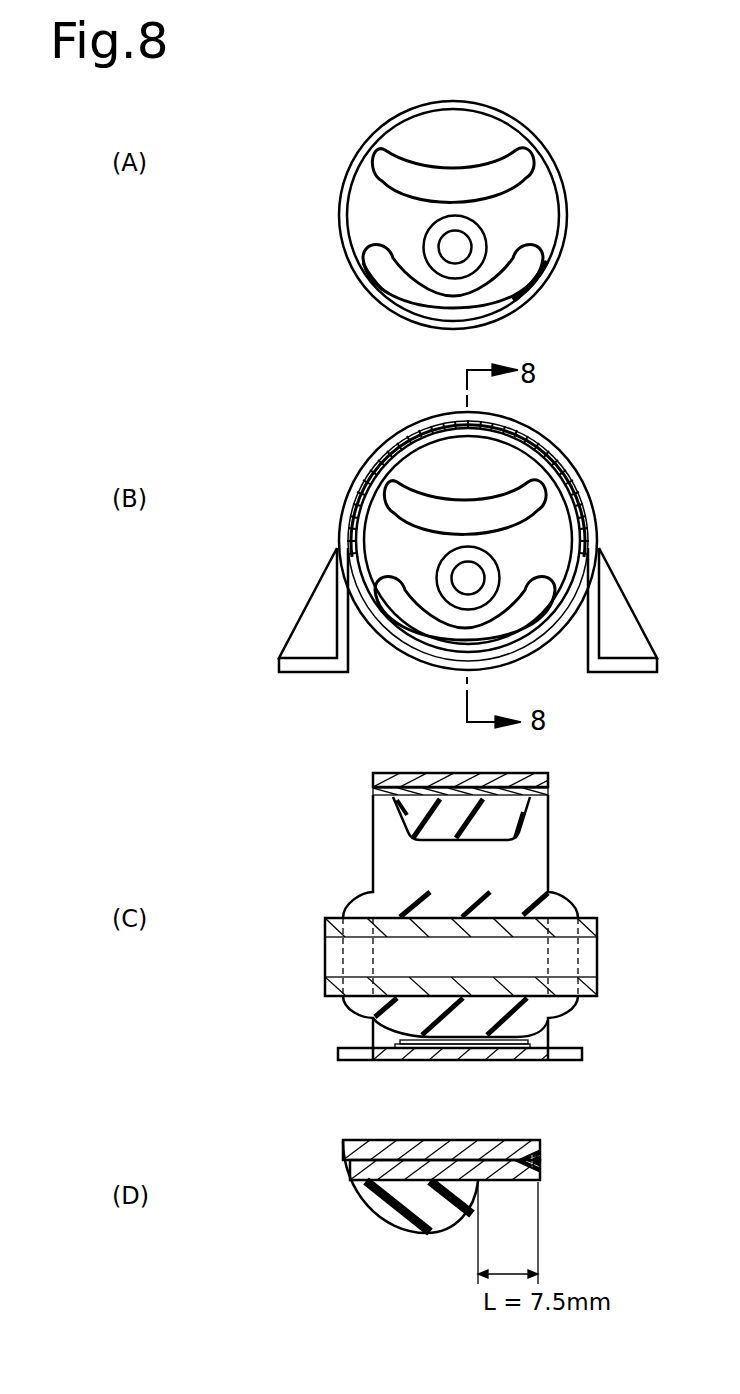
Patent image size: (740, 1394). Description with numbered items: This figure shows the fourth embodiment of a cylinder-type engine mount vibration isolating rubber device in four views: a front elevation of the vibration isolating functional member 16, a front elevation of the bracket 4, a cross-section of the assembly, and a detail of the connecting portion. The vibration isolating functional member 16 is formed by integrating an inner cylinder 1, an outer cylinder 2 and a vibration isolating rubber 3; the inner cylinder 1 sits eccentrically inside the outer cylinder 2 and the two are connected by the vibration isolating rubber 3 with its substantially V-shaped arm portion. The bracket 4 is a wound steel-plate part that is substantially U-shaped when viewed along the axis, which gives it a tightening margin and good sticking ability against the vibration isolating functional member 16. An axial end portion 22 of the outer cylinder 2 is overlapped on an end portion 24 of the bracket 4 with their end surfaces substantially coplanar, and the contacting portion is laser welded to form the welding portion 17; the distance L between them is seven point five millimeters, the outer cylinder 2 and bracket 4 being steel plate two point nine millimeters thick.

The inner cylinder 1 is at (473, 268).
The outer cylinder 2 is at (503, 110).
The vibration isolating rubber 3 is at (527, 216).
The bracket 4 is at (593, 494).
The vibration isolating functional member 16 is at (347, 154).
The welding portion 17 is at (368, 462).
The axial end portion 22 is at (511, 1172).
The end portion 24 is at (533, 428).